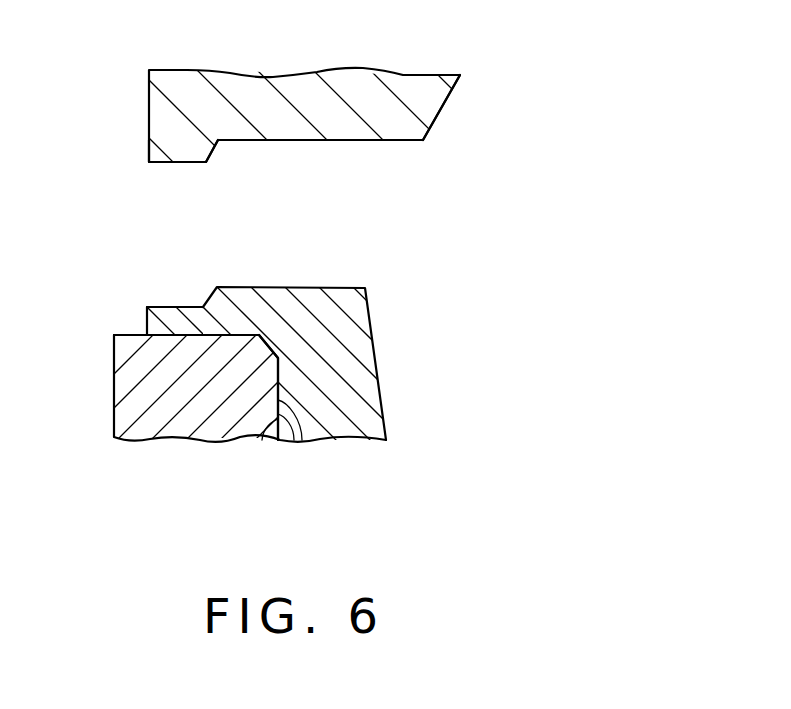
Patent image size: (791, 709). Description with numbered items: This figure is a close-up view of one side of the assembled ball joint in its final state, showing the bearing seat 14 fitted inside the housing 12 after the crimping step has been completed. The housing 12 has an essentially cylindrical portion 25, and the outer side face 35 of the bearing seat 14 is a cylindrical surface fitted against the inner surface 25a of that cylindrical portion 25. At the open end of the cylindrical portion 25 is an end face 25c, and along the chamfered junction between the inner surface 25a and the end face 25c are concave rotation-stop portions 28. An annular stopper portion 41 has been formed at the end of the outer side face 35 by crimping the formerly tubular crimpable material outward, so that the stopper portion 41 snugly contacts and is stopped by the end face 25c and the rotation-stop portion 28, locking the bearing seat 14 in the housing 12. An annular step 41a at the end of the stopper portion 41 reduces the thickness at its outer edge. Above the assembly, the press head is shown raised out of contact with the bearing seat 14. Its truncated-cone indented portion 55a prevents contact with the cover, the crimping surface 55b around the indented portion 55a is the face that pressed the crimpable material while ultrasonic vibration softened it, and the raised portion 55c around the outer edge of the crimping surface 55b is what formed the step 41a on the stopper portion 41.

The housing 12 is at (113, 402).
The bearing seat 14 is at (367, 424).
The cylindrical portion 25 is at (113, 363).
The inner surface 25a is at (307, 440).
The end face 25c is at (238, 334).
The rotation-stop portion 28 is at (273, 343).
The outer side face 35 is at (256, 440).
The annular stopper portion 41 is at (147, 325).
The annular step 41a is at (187, 307).
The indented portion 55a is at (441, 108).
The crimping surface 55b is at (360, 143).
The raised portion 55c is at (168, 163).